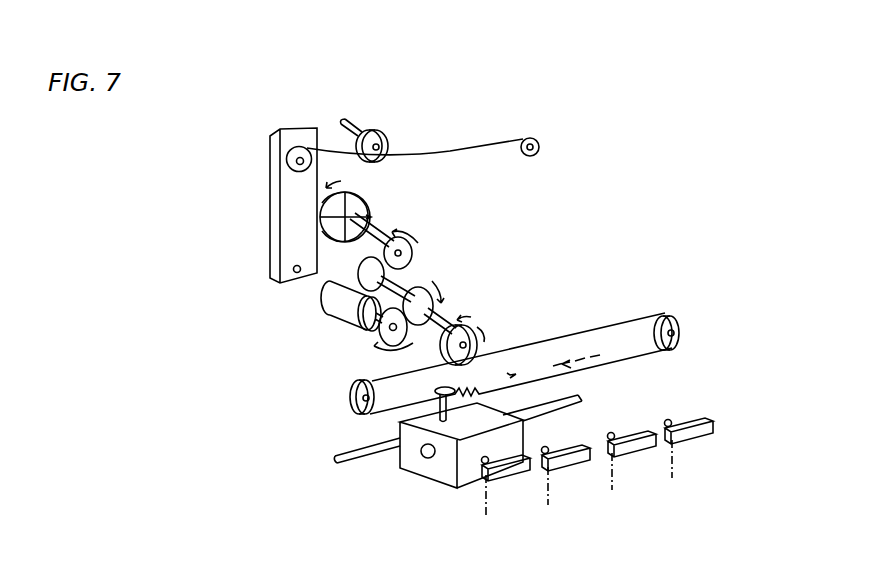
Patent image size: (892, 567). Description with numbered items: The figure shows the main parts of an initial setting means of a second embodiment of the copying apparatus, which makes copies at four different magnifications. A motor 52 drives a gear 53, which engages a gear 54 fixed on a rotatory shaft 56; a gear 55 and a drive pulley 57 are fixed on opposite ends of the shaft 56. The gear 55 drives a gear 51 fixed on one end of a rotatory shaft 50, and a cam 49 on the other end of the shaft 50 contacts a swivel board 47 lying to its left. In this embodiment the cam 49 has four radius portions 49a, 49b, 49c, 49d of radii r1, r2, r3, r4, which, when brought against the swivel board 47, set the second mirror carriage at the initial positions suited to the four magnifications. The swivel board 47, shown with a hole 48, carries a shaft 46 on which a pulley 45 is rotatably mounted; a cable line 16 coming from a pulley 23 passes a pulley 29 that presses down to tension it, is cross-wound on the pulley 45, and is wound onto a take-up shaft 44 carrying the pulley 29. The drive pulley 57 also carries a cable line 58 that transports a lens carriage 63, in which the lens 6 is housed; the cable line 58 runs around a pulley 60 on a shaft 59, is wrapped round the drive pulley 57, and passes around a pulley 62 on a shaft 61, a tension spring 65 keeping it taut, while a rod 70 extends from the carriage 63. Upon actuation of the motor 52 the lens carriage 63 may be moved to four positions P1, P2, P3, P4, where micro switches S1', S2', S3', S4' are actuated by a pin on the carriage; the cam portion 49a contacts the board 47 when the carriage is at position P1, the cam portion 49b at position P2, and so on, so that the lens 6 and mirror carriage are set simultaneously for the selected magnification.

The lens 6 is at (423, 460).
The cable line 16 is at (478, 150).
The pulley 23 is at (528, 156).
The pulley 29 is at (380, 131).
The take-up shaft 44 is at (344, 122).
The pulley 45 is at (289, 148).
The shaft 46 is at (290, 166).
The swivel board 47 is at (271, 220).
The hole 48 is at (294, 271).
The cam 49 is at (356, 204).
The cam portion 49a is at (322, 204).
The cam portion 49b is at (343, 191).
The cam portion 49c is at (371, 213).
The cam portion 49d is at (345, 241).
The radius r1 is at (332, 209).
The radius r2 is at (353, 204).
The radius r3 is at (365, 210).
The radius r4 is at (340, 229).
The rotatory shaft 50 is at (386, 224).
The gear 51 is at (410, 262).
The motor 52 is at (335, 307).
The gear 53 is at (379, 331).
The gear 54 is at (437, 286).
The gear 55 is at (357, 264).
The rotatory shaft 56 is at (436, 318).
The drive pulley 57 is at (486, 325).
The cable line 58 is at (617, 327).
The shaft 59 is at (367, 406).
The pulley 60 is at (354, 392).
The shaft 61 is at (679, 333).
The pulley 62 is at (673, 348).
The lens carriage 63 is at (444, 478).
The tension spring 65 is at (470, 383).
The rod 70 is at (363, 458).
The micro switch S1' is at (692, 450).
The micro switch S2' is at (634, 463).
The micro switch S3' is at (568, 476).
The micro switch S4' is at (508, 488).
The position P1 is at (672, 478).
The position P2 is at (612, 490).
The position P3 is at (548, 505).
The position P4 is at (486, 515).